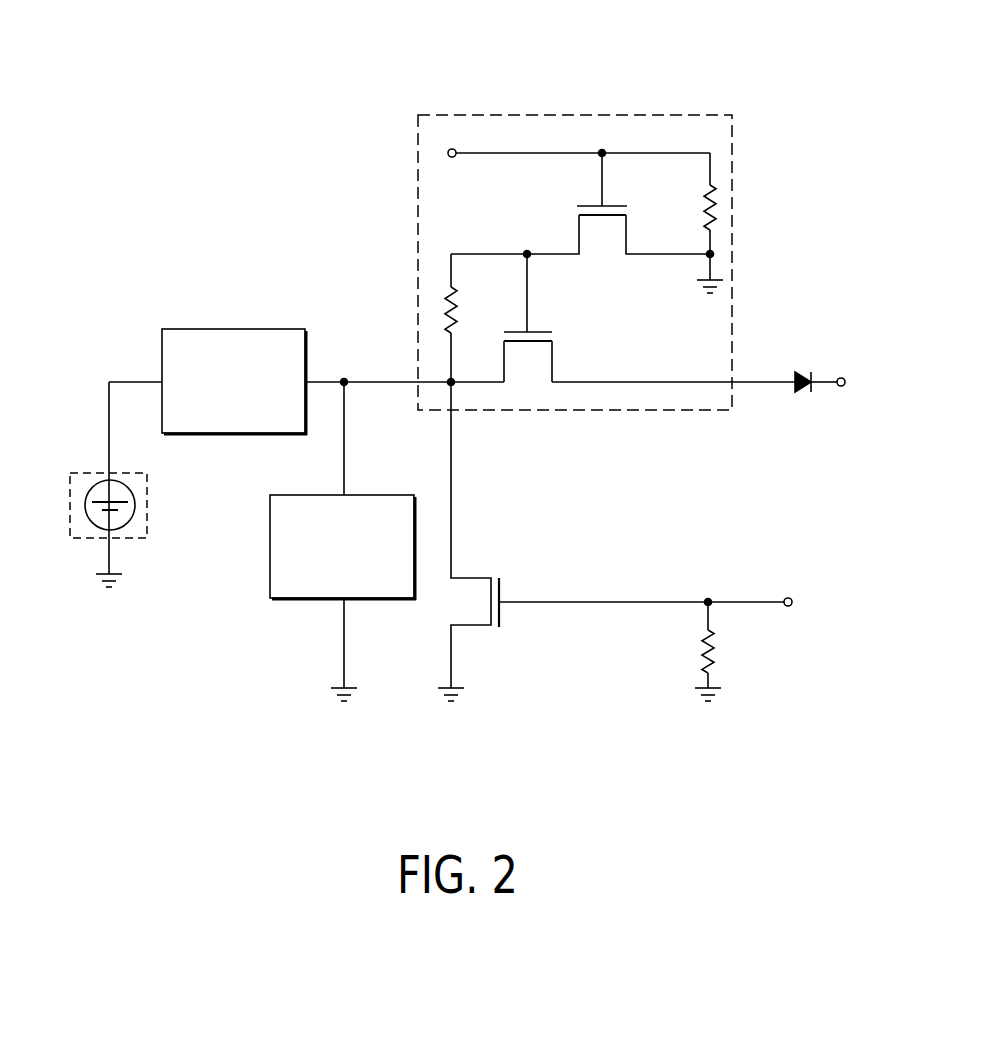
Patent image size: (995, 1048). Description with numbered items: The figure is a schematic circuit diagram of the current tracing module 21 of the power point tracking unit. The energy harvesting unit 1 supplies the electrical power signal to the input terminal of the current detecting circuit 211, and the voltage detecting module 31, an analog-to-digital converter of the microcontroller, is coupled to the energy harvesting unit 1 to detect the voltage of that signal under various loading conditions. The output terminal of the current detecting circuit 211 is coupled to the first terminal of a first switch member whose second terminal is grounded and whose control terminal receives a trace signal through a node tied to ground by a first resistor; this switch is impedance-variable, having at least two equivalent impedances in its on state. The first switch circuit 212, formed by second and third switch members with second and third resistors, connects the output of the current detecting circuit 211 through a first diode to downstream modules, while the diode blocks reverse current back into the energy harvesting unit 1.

The current tracing module 21 is at (295, 74).
The first switch circuit 212 is at (670, 115).
The current detecting circuit 211 is at (240, 329).
The voltage detecting module 31 is at (270, 548).
The energy harvesting unit 1 is at (68, 495).